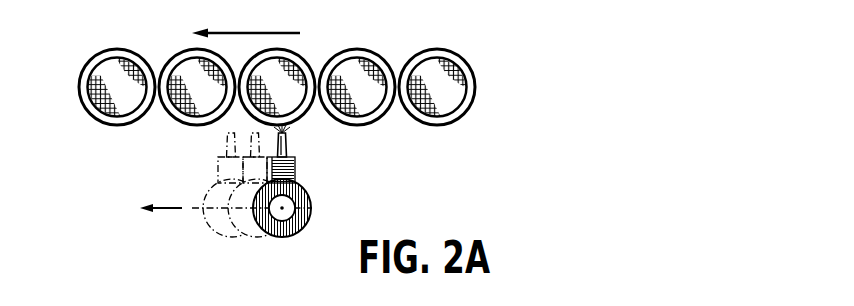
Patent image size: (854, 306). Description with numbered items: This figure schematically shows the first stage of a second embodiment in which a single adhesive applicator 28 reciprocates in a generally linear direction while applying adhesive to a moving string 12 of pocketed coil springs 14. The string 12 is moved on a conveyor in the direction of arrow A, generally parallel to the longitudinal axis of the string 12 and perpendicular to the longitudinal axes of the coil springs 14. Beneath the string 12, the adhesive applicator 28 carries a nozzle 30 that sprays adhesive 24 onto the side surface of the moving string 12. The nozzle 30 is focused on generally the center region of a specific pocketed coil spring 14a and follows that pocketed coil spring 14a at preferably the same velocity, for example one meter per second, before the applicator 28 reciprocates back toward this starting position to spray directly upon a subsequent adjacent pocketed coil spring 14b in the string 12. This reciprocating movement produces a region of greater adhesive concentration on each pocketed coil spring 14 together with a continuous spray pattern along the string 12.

The string of pocketed coil springs 12 is at (305, 71).
The pocketed coil spring 14 is at (118, 48).
The specific pocketed coil spring 14a is at (301, 53).
The subsequent adjacent pocketed coil spring 14b is at (378, 53).
The direction of string movement arrow A is at (258, 33).
The adhesive 24 is at (288, 137).
The adhesive applicator 28 is at (263, 203).
The nozzle 30 is at (285, 148).